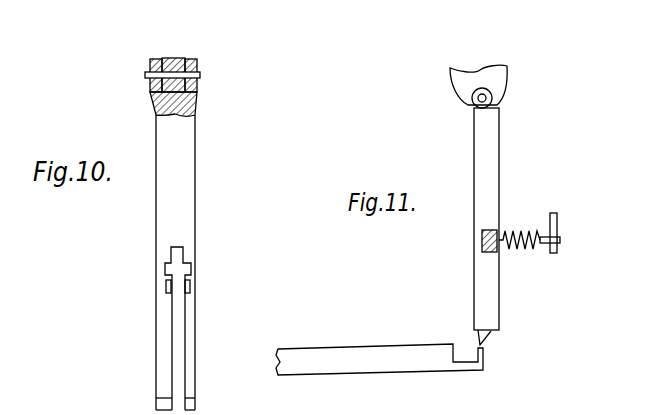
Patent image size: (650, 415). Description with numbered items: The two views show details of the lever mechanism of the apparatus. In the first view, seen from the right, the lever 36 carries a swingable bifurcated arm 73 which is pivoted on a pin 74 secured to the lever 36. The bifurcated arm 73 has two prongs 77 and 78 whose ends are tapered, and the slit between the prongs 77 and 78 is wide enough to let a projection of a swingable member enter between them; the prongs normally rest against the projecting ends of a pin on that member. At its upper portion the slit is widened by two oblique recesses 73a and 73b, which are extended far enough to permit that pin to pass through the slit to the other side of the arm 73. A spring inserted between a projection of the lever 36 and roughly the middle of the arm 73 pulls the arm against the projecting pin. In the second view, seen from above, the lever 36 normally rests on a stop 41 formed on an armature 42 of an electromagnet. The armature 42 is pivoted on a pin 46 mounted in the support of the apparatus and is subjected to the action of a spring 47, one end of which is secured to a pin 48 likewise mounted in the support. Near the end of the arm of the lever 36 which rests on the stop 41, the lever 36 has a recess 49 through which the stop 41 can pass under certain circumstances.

In FIG. 10, the lever 36 is at (172, 58).
In FIG. 11, the lever 36 is at (362, 357).
In FIG. 10, the pin 74 is at (200, 76).
In FIG. 10, the bifurcated arm 73 is at (196, 147).
In FIG. 10, the oblique recess 73a is at (166, 272).
In FIG. 10, the oblique recess 73b is at (189, 272).
In FIG. 10, the prong 77 is at (163, 330).
In FIG. 10, the prong 78 is at (190, 322).
In FIG. 11, the pin 46 is at (497, 100).
In FIG. 11, the spring 47 is at (533, 231).
In FIG. 11, the pin 48 is at (553, 252).
In FIG. 11, the armature 42 is at (500, 295).
In FIG. 11, the recess 49 is at (468, 360).
In FIG. 11, the stop 41 is at (488, 343).